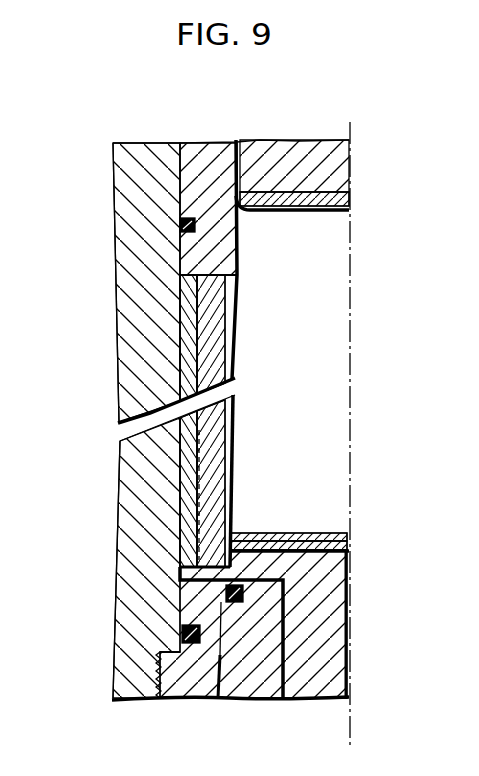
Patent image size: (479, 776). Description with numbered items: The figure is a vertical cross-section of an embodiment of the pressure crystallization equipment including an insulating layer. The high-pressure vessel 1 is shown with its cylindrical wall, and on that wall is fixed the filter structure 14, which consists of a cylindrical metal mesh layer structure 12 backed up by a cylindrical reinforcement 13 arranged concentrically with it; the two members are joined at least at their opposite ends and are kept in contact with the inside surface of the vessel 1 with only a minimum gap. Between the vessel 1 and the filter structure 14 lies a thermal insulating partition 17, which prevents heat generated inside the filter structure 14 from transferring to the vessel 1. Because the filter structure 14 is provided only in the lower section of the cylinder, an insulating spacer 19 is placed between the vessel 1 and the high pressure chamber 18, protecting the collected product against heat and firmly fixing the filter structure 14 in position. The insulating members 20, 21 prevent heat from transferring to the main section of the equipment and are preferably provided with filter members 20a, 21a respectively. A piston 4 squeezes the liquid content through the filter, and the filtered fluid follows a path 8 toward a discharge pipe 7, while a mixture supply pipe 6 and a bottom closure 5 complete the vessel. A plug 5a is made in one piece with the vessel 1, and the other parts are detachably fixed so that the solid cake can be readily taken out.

The vessel 1 is at (132, 256).
The piston 4 is at (345, 174).
The bottom closure 5 is at (308, 685).
The plug 5a is at (190, 685).
The mixture supply pipe 6 is at (352, 617).
The discharge pipe 7 is at (270, 668).
The path 8 is at (200, 607).
The cylindrical metal mesh layer structure 12 is at (205, 346).
The cylindrical reinforcement 13 is at (190, 383).
The filter structure 14 is at (62, 322).
The thermal insulating partition 17 is at (183, 495).
The high pressure chamber 18 is at (290, 302).
The insulating spacer 19 is at (186, 186).
The insulating member 20 is at (346, 200).
The filter member 20a is at (333, 214).
The insulating member 21 is at (347, 545).
The filter member 21a is at (322, 534).